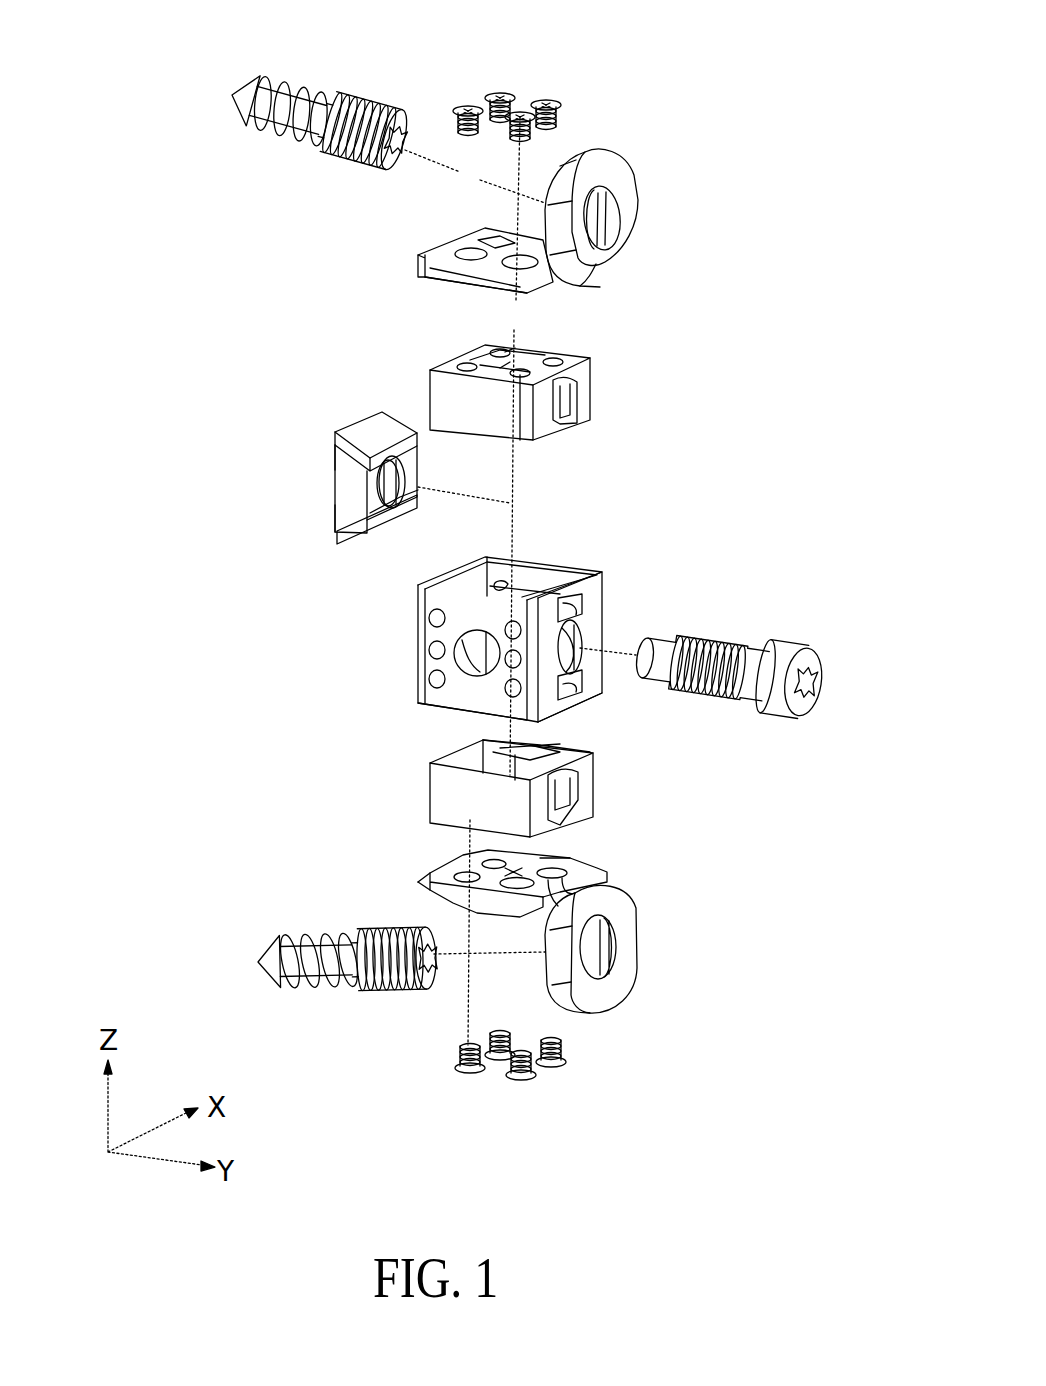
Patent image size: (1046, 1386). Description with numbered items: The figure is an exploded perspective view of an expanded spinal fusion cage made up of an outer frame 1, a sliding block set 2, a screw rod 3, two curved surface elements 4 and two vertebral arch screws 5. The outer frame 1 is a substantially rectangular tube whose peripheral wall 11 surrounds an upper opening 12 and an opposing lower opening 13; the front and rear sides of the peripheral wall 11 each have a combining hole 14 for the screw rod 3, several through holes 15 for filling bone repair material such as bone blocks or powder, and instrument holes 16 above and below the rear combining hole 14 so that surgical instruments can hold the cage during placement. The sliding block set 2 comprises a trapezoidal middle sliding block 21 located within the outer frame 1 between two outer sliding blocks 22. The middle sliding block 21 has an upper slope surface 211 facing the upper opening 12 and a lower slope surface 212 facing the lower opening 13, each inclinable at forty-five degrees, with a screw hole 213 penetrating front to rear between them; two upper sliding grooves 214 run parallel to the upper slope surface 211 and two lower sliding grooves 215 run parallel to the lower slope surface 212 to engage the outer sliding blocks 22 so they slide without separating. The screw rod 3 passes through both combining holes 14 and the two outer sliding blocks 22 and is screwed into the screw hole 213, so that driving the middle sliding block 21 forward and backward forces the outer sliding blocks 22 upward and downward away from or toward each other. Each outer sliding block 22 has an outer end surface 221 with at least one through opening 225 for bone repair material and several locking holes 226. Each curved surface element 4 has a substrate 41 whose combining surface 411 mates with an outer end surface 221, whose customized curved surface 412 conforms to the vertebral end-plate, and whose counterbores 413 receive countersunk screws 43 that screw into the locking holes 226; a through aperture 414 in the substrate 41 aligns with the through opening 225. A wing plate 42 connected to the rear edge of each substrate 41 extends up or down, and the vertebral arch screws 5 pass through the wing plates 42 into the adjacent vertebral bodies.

The outer frame 1 is at (508, 651).
The peripheral wall 11 is at (445, 688).
The upper opening 12 is at (545, 574).
The lower opening 13 is at (442, 706).
The combining hole 14 is at (582, 630).
The through holes 15 is at (437, 665).
The instrument holes 16 is at (582, 693).
The sliding block set 2 is at (206, 347).
The middle sliding block 21 is at (349, 471).
The upper slope surface 211 is at (363, 428).
The lower slope surface 212 is at (385, 512).
The screw hole 213 is at (415, 475).
The upper sliding grooves 214 is at (336, 457).
The lower sliding grooves 215 is at (336, 528).
The outer sliding blocks 22 is at (430, 392).
The outer end surface 221 is at (592, 372).
The through opening 225 is at (505, 357).
The locking holes 226 is at (568, 356).
The screw rod 3 is at (784, 652).
The curved surface elements 4 is at (526, 587).
The substrate 41 is at (510, 545).
The combining surface 411 is at (458, 292).
The customized curved surface 412 is at (432, 252).
The counterbores 413 is at (492, 247).
The through aperture 414 is at (560, 858).
The wing plate 42 is at (636, 222).
The countersunk screws 43 is at (550, 97).
The vertebral arch screws 5 is at (378, 104).